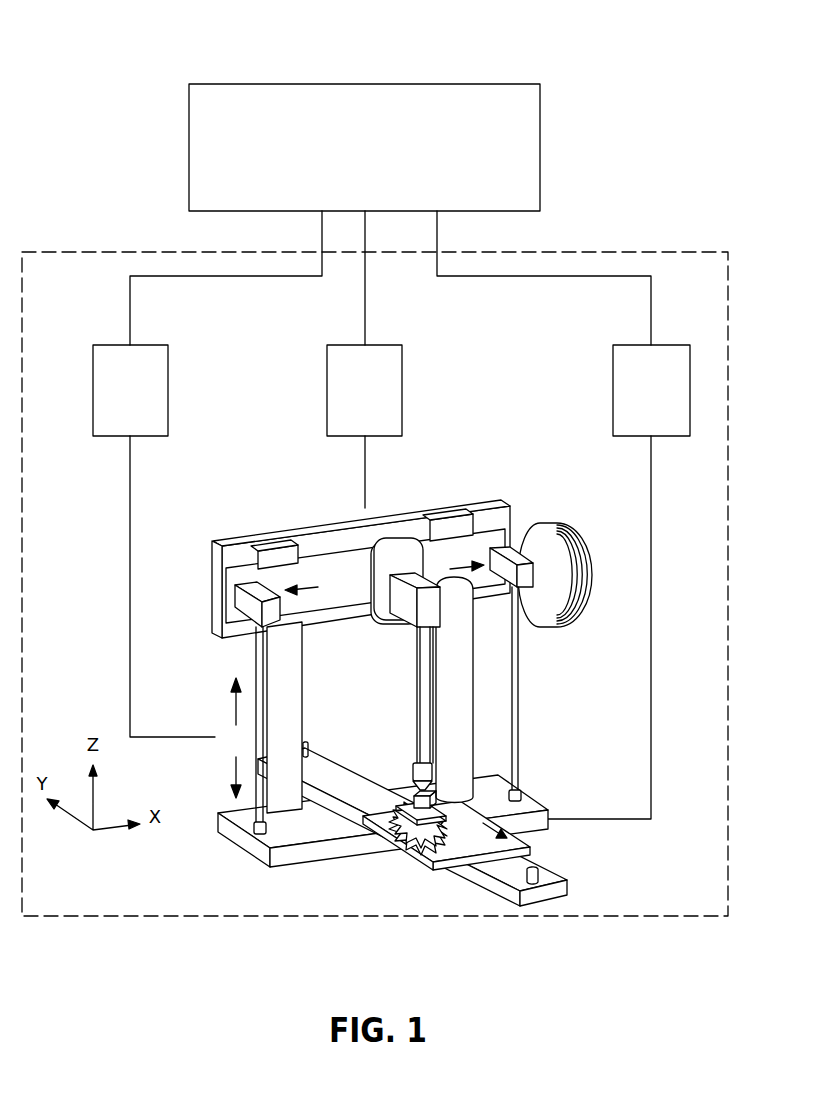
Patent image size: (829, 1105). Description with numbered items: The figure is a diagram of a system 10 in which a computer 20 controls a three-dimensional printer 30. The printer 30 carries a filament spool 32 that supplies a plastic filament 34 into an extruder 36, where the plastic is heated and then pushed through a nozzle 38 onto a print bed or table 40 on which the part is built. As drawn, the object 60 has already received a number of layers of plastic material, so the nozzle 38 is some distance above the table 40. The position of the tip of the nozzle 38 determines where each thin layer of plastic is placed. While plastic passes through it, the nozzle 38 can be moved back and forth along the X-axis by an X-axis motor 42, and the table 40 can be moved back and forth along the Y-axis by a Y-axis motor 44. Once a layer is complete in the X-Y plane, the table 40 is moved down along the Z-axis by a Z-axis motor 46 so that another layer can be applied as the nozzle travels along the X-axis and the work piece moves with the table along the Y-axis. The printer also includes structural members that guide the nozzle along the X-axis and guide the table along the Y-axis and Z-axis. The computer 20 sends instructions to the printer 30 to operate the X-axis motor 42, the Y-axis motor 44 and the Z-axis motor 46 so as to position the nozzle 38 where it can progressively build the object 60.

The system 10 is at (133, 92).
The computer 20 is at (478, 84).
The three-dimensional printer 30 is at (655, 252).
The filament spool 32 is at (557, 523).
The plastic filament 34 is at (428, 578).
The extruder 36 is at (418, 578).
The nozzle 38 is at (413, 777).
The print bed or table 40 is at (413, 850).
The X-axis motor 42 is at (392, 345).
The Y-axis motor 44 is at (680, 345).
The Z-axis motor 46 is at (158, 345).
The object 60 is at (436, 778).